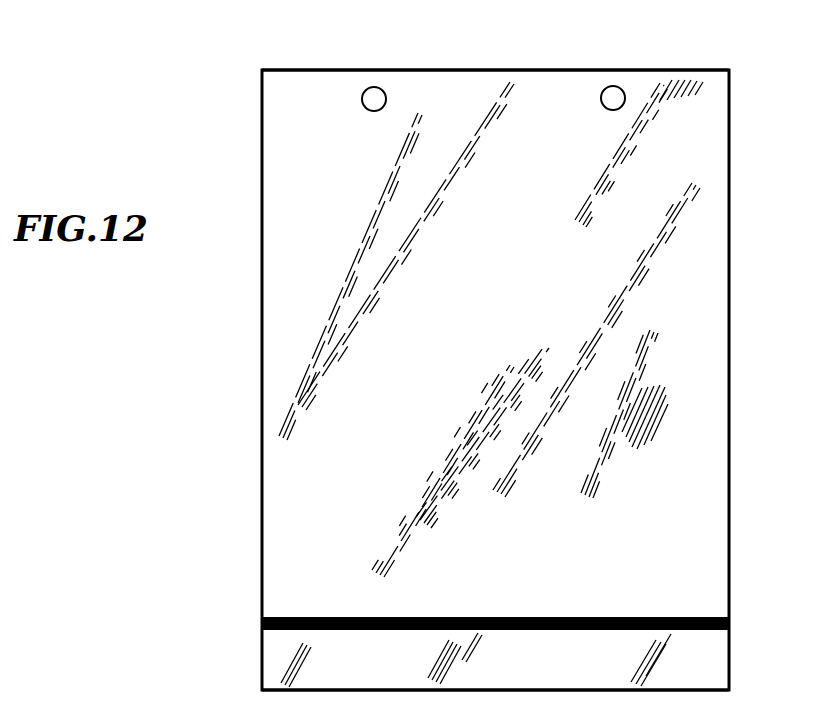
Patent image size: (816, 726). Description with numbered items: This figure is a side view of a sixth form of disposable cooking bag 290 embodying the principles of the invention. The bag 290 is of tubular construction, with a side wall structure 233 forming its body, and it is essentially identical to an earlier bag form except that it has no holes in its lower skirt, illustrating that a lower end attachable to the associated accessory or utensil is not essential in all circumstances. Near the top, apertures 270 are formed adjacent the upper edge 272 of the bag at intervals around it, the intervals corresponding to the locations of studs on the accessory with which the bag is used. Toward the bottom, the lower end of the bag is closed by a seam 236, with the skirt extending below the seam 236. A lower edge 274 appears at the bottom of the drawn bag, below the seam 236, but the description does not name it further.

The disposable cooking bag 290 is at (294, 63).
The upper edge 272 is at (497, 70).
The bottom edge 274 is at (462, 690).
The apertures 270 is at (365, 108).
The side wall structure 233 is at (502, 310).
The seam 236 is at (570, 617).